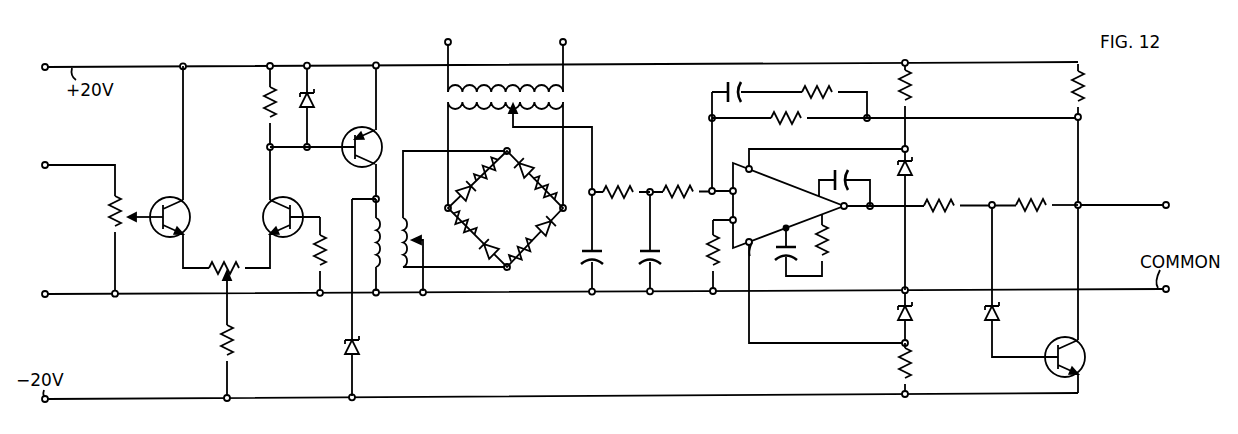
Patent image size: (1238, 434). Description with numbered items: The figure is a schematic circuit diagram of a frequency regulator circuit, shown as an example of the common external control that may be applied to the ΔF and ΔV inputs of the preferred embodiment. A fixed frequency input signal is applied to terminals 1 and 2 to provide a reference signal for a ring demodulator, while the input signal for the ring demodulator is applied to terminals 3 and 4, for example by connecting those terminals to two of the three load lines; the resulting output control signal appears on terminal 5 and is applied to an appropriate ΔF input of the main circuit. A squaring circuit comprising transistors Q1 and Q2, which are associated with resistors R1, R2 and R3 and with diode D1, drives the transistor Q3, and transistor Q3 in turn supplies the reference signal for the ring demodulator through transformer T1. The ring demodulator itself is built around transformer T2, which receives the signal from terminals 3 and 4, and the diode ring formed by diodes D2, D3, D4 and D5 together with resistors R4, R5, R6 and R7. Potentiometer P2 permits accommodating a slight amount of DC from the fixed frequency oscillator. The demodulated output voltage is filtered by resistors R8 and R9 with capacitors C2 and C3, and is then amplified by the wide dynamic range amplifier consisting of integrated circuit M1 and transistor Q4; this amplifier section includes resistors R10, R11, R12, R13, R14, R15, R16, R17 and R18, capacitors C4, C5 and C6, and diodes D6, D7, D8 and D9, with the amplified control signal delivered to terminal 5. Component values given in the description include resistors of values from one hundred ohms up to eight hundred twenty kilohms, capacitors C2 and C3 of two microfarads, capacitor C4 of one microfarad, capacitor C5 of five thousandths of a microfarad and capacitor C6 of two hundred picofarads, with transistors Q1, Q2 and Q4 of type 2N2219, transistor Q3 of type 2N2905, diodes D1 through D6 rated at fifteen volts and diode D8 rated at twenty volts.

The terminal 1 is at (44, 164).
The terminal 2 is at (47, 293).
The terminal 3 is at (451, 42).
The terminal 4 is at (566, 42).
The terminal 5 is at (1167, 204).
The transistor Q1 is at (168, 195).
The transistor Q2 is at (269, 197).
The transistor Q3 is at (376, 141).
The transistor Q4 is at (1084, 368).
The potentiometer P2 is at (230, 264).
The resistor R1 is at (232, 350).
The resistor R2 is at (260, 103).
The resistor R3 is at (314, 259).
The resistor R4 is at (478, 162).
The resistor R5 is at (454, 223).
The resistor R6 is at (522, 256).
The resistor R7 is at (536, 196).
The resistor R8 is at (620, 186).
The resistor R9 is at (686, 190).
The resistor R10 is at (710, 278).
The resistor R11 is at (782, 124).
The resistor R12 is at (826, 90).
The resistor R13 is at (824, 248).
The resistor R14 is at (910, 358).
The resistor R15 is at (914, 90).
The resistor R16 is at (938, 202).
The resistor R17 is at (1034, 200).
The resistor R18 is at (1086, 82).
The diode D1 is at (311, 105).
The diode D2 is at (472, 199).
The diode D3 is at (478, 250).
The diode D4 is at (538, 225).
The diode D5 is at (540, 150).
The diode D6 is at (910, 164).
The diode D7 is at (892, 314).
The diode D8 is at (1000, 314).
The diode D9 is at (360, 350).
The capacitor C2 is at (622, 240).
The capacitor C3 is at (680, 240).
The capacitor C4 is at (726, 82).
The capacitor C5 is at (778, 258).
The capacitor C6 is at (845, 166).
The transformer T1 is at (441, 221).
The transformer T2 is at (521, 145).
The integrated circuit M1 is at (818, 246).